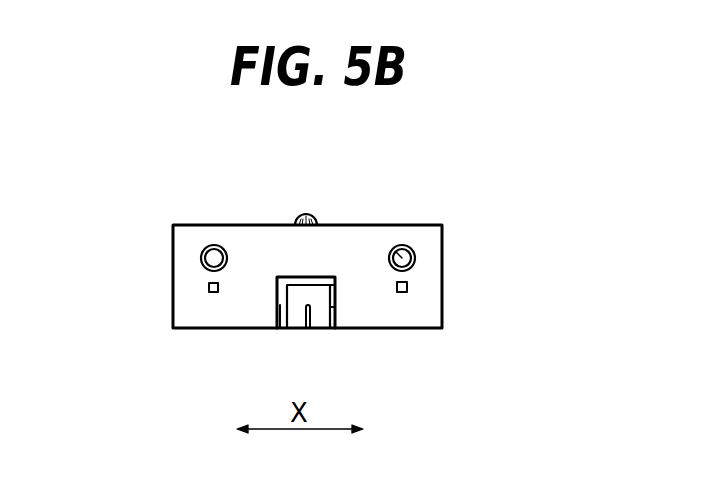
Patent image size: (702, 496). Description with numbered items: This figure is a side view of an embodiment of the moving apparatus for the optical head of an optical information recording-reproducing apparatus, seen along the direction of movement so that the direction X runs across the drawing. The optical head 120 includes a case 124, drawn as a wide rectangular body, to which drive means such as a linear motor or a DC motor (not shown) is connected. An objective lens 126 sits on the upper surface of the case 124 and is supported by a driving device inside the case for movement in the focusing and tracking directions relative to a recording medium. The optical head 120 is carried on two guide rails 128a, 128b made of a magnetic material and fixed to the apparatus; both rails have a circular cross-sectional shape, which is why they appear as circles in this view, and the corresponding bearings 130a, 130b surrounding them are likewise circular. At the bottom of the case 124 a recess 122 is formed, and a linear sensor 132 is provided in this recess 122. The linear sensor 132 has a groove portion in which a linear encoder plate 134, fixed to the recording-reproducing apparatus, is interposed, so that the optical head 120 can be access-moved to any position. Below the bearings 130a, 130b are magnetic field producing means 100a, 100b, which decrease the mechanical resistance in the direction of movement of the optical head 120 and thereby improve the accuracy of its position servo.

The optical head 120 is at (428, 199).
The case 124 is at (427, 290).
The objective lens 126 is at (302, 213).
The guide rail 128a is at (405, 259).
The guide rail 128b is at (214, 255).
The bearing 130a is at (410, 249).
The bearing 130b is at (202, 262).
The magnetic field producing means 100a is at (405, 293).
The magnetic field producing means 100b is at (208, 289).
The recess 122 is at (278, 330).
The linear sensor 132 is at (330, 312).
The linear encoder plate 134 is at (306, 306).